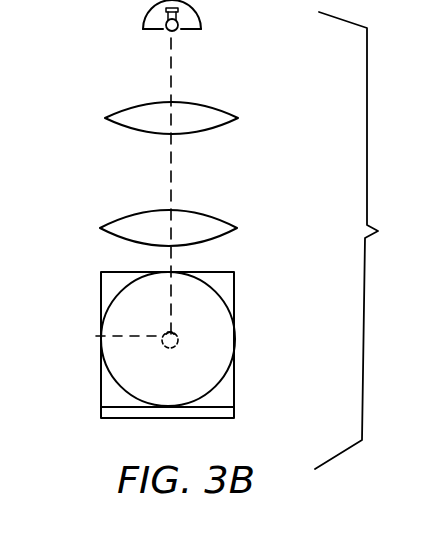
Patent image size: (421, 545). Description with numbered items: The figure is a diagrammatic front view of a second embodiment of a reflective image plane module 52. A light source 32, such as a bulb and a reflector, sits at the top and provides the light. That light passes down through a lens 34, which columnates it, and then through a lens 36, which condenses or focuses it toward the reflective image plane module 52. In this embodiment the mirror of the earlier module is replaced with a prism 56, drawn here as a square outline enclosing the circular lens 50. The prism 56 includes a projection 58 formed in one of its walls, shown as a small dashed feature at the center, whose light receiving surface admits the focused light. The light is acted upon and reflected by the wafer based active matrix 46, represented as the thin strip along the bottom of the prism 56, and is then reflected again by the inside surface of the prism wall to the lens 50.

The light source 32 is at (201, 22).
The lens 34 is at (231, 113).
The lens 36 is at (231, 223).
The prism 56 is at (234, 272).
The lens 50 is at (229, 341).
The wafer based active matrix 46 is at (100, 416).
The projection 58 is at (91, 332).
The reflective image plane module 52 is at (268, 396).